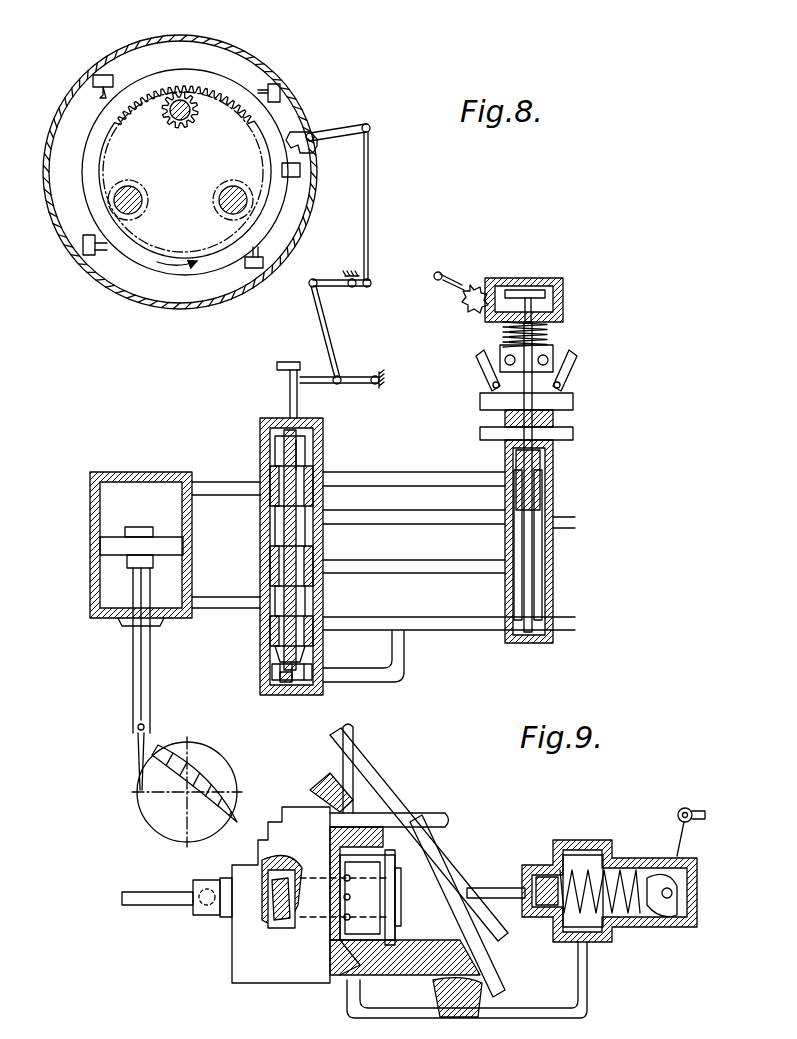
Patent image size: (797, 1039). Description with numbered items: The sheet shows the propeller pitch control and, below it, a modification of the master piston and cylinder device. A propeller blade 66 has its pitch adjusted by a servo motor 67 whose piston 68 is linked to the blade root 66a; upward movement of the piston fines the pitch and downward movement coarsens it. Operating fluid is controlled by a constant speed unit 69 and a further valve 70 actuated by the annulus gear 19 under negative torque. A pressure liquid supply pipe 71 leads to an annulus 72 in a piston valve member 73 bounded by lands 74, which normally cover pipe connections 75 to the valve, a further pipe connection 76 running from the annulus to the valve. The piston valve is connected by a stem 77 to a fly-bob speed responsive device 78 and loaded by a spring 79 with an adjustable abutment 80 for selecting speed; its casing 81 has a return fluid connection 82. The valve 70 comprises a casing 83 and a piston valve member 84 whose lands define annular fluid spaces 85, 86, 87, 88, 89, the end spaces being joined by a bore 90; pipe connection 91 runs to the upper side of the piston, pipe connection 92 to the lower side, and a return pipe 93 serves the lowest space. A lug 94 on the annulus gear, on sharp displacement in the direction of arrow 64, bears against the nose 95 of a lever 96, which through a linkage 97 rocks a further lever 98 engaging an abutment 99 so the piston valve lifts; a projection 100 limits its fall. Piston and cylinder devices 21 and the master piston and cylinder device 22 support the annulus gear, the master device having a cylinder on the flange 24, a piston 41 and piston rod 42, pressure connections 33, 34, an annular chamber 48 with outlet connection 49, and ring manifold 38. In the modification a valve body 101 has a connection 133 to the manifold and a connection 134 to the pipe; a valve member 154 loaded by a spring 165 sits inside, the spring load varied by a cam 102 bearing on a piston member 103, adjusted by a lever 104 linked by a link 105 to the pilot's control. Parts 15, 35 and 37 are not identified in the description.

In FIG. 8, the shafts 15 is at (170, 147).
In FIG. 8, the annulus gear 19 is at (215, 83).
In FIG. 8, the piston and cylinder devices 21 is at (97, 77).
In FIG. 8, the master piston and cylinder device 22 is at (282, 92).
In FIG. 9, the master piston and cylinder device 22 is at (274, 985).
In FIG. 8, the flange 24 is at (116, 299).
In FIG. 9, the flange 24 is at (318, 788).
In FIG. 9, the pressure connection 33 is at (372, 816).
In FIG. 9, the pressure connection 34 is at (346, 978).
In FIG. 9, the rod 35 is at (152, 906).
In FIG. 9, the block 37 is at (205, 906).
In FIG. 9, the ring manifold 38 is at (386, 783).
In FIG. 9, the piston 41 is at (238, 965).
In FIG. 9, the piston rod 42 is at (226, 913).
In FIG. 9, the annular chamber 48 is at (358, 942).
In FIG. 9, the outlet connection 49 is at (355, 735).
In FIG. 8, the arrow 64 is at (178, 270).
In FIG. 8, the propeller blade 66 is at (171, 745).
In FIG. 8, the blade root 66a is at (140, 807).
In FIG. 8, the servo motor 67 is at (93, 512).
In FIG. 8, the piston 68 is at (106, 553).
In FIG. 8, the constant speed unit 69 is at (478, 405).
In FIG. 8, the valve 70 is at (257, 415).
In FIG. 8, the pressure liquid supply pipe 71 is at (576, 526).
In FIG. 8, the annulus 72 is at (546, 506).
In FIG. 8, the piston valve member 73 is at (556, 461).
In FIG. 8, the lands 74 is at (548, 488).
In FIG. 8, the pipe connections 75 is at (380, 472).
In FIG. 8, the pipe connection 76 is at (380, 510).
In FIG. 8, the stem 77 is at (560, 420).
In FIG. 8, the fly-bob speed responsive device 78 is at (574, 405).
In FIG. 8, the spring 79 is at (550, 334).
In FIG. 8, the adjustable abutment 80 is at (566, 291).
In FIG. 8, the casing 81 is at (506, 452).
In FIG. 8, the return fluid connection 82 is at (576, 617).
In FIG. 8, the casing 83 is at (266, 679).
In FIG. 8, the piston valve member 84 is at (283, 535).
In FIG. 8, the annular fluid space 85 is at (271, 440).
In FIG. 8, the annular fluid space 86 is at (270, 472).
In FIG. 8, the annular fluid space 87 is at (271, 519).
In FIG. 8, the annular fluid space 88 is at (272, 585).
In FIG. 8, the annular fluid space 89 is at (272, 623).
In FIG. 8, the bore 90 is at (298, 456).
In FIG. 8, the pipe connection 91 is at (226, 482).
In FIG. 8, the pipe connection 92 is at (213, 608).
In FIG. 8, the return pipe 93 is at (423, 632).
In FIG. 8, the lug 94 is at (300, 172).
In FIG. 8, the nose 95 is at (313, 147).
In FIG. 8, the lever 96 is at (336, 128).
In FIG. 8, the linkage 97 is at (330, 318).
In FIG. 8, the lever 98 is at (345, 374).
In FIG. 8, the abutment 99 is at (288, 362).
In FIG. 8, the projection 100 is at (282, 680).
In FIG. 9, the valve body 101 is at (606, 944).
In FIG. 9, the cam 102 is at (665, 912).
In FIG. 9, the piston member 103 is at (630, 872).
In FIG. 9, the lever 104 is at (674, 852).
In FIG. 9, the link 105 is at (688, 807).
In FIG. 9, the connection 133 is at (488, 887).
In FIG. 9, the connection 134 is at (578, 990).
In FIG. 9, the valve member 154 is at (546, 866).
In FIG. 9, the spring 165 is at (575, 870).